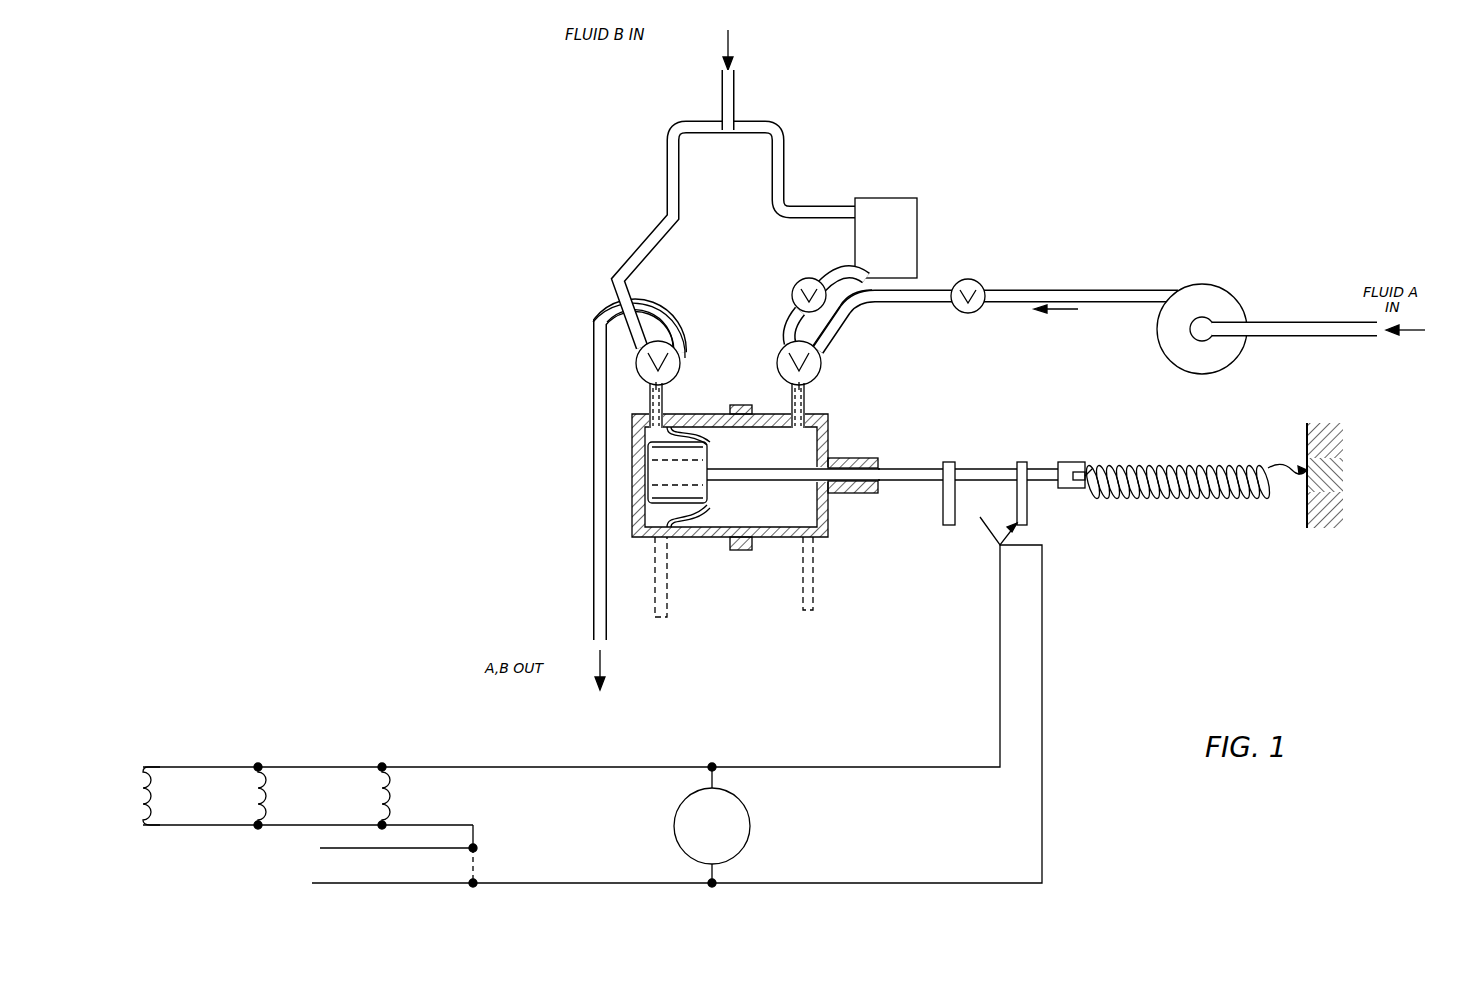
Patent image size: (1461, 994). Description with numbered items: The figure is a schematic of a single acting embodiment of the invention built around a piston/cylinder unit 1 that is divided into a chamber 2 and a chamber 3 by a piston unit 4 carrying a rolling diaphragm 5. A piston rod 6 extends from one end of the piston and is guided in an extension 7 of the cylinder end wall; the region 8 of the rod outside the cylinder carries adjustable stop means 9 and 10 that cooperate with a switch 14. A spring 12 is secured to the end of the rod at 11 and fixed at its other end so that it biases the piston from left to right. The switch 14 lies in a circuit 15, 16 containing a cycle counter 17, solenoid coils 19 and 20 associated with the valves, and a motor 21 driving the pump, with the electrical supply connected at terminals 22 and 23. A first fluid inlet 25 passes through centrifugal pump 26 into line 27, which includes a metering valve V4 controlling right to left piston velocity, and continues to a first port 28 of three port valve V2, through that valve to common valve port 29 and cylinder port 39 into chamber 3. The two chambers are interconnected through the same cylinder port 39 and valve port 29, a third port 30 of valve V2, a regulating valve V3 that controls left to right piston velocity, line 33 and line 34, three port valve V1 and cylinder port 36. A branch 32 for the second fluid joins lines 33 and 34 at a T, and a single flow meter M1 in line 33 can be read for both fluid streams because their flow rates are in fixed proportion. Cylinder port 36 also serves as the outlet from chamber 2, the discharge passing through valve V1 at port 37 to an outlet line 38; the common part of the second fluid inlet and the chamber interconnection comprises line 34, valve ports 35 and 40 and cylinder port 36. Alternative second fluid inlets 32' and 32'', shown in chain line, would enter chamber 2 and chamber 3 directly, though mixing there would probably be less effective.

The piston/cylinder unit 1 is at (780, 540).
The chamber 2 is at (654, 526).
The chamber 3 is at (765, 509).
The piston unit 4 is at (698, 470).
The rolling diaphragm 5 is at (706, 490).
The piston rod 6 is at (781, 469).
The extension 7 is at (846, 458).
The region of the piston rod 8 is at (906, 468).
The adjustable stop means 9 is at (942, 502).
The adjustable stop means 10 is at (1028, 502).
The end of the piston rod 11 is at (1068, 462).
The spring 12 is at (1180, 466).
The switch 14 is at (985, 536).
The circuit 15 is at (907, 767).
The circuit 16 is at (923, 883).
The cycle counter 17 is at (751, 828).
The coil 19 is at (393, 795).
The coil 20 is at (270, 795).
The motor 21 is at (160, 795).
The terminal 22 is at (478, 846).
The terminal 23 is at (478, 881).
The first fluid inlet 25 is at (1300, 322).
The centrifugal pump 26 is at (1225, 298).
The line 27 is at (1060, 289).
The first port 28 is at (822, 355).
The common valve port 29 is at (812, 385).
The third port 30 is at (786, 350).
The branch 32 is at (751, 100).
The fluid inlet 32' is at (689, 577).
The fluid inlet 32'' is at (835, 573).
The line 33 is at (787, 168).
The line 34 is at (683, 178).
The valve port 35 is at (652, 338).
The cylinder port 36 is at (649, 406).
The port 37 is at (690, 352).
The outlet line 38 is at (592, 320).
The cylinder port 39 is at (806, 406).
The valve port 40 is at (668, 385).
The three port valve V1 is at (640, 380).
The three port valve V2 is at (778, 381).
The regulating valve V3 is at (796, 290).
The metering valve V4 is at (968, 280).
The flow meter M1 is at (917, 216).